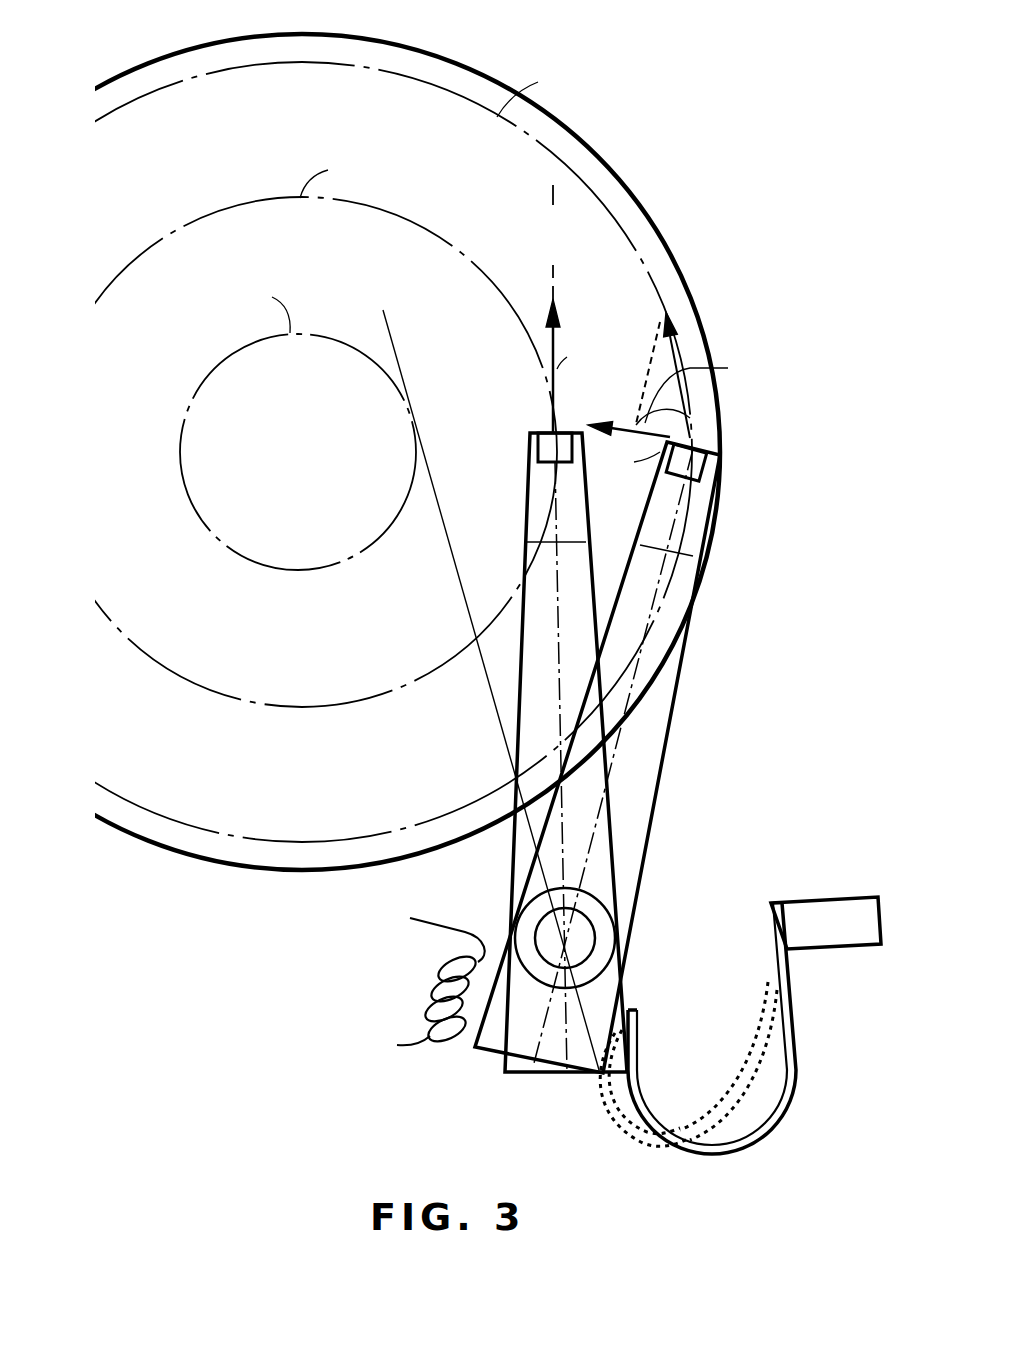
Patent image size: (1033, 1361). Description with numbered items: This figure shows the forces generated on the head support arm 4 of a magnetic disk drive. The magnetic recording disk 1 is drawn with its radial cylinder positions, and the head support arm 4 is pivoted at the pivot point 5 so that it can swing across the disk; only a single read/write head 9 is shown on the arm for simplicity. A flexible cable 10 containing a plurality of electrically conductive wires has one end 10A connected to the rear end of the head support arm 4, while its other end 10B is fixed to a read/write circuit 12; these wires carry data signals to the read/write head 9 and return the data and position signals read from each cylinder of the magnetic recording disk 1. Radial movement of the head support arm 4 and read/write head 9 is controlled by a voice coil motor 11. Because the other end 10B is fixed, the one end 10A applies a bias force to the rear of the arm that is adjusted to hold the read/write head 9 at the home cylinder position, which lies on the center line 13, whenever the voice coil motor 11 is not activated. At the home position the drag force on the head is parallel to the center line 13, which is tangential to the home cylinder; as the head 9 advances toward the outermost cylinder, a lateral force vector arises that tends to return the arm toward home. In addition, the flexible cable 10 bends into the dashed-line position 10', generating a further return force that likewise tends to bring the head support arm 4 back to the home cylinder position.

The magnetic recording disk 1 is at (178, 856).
The head support arm 4 is at (640, 807).
The pivot point 5 is at (575, 943).
The read/write head 9 is at (722, 457).
The flexible cable 10 is at (729, 1028).
The one end of flexible cable 10A is at (640, 1025).
The other end of flexible cable 10B is at (770, 920).
The bent flexible cable 10' is at (688, 1064).
The voice coil motor 11 is at (403, 1007).
The read/write circuit 12 is at (818, 908).
The center line 13 is at (502, 628).